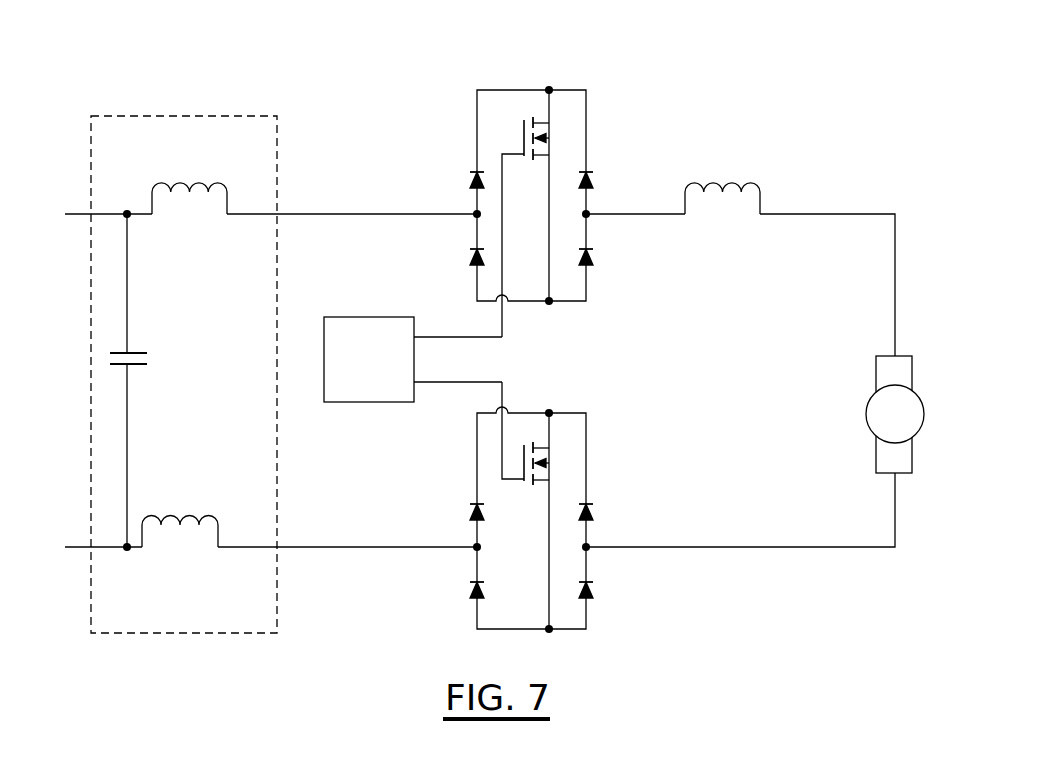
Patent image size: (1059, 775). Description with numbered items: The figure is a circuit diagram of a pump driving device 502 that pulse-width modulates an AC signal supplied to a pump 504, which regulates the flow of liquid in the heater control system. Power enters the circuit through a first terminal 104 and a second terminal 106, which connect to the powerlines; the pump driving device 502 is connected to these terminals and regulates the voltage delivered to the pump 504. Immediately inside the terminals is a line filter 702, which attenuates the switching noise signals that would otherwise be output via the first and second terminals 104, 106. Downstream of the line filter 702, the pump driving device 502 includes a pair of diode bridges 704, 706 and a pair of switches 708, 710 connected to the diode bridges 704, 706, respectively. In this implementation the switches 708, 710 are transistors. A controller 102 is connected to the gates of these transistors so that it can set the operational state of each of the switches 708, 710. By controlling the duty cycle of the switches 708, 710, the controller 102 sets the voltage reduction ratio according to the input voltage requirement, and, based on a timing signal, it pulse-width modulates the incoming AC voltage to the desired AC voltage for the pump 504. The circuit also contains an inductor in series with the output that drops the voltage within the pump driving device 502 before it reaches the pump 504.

The controller 102 is at (352, 317).
The first terminal 104 is at (109, 214).
The second terminal 106 is at (102, 547).
The pump driving device 502 is at (266, 58).
The pump 504 is at (876, 373).
The line filter 702 is at (277, 172).
The diode bridge 704 is at (477, 103).
The diode bridge 706 is at (587, 480).
The switch 708 is at (542, 120).
The switch 710 is at (547, 456).